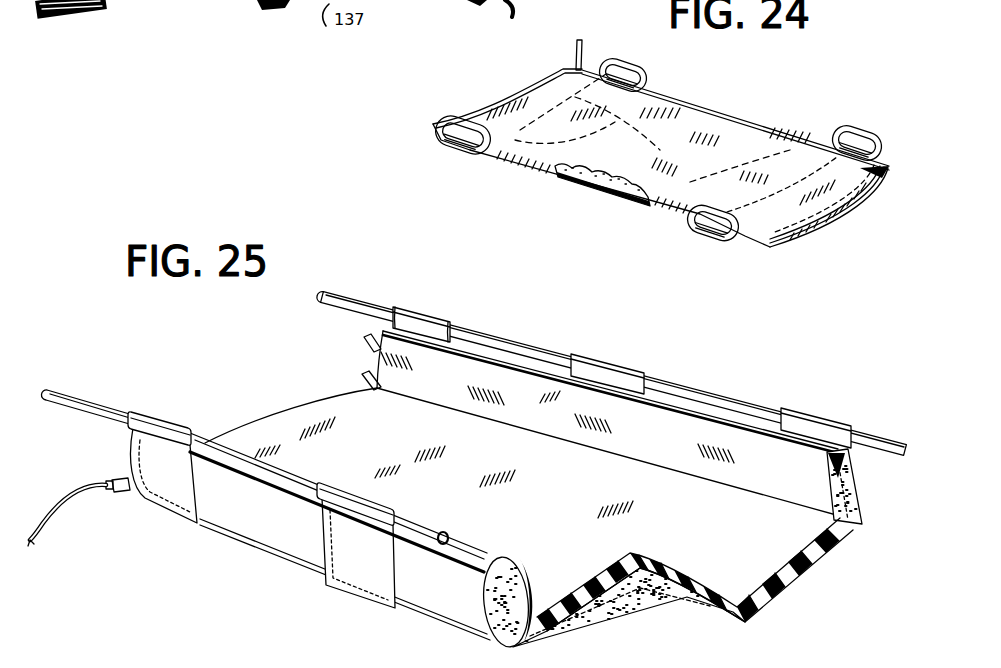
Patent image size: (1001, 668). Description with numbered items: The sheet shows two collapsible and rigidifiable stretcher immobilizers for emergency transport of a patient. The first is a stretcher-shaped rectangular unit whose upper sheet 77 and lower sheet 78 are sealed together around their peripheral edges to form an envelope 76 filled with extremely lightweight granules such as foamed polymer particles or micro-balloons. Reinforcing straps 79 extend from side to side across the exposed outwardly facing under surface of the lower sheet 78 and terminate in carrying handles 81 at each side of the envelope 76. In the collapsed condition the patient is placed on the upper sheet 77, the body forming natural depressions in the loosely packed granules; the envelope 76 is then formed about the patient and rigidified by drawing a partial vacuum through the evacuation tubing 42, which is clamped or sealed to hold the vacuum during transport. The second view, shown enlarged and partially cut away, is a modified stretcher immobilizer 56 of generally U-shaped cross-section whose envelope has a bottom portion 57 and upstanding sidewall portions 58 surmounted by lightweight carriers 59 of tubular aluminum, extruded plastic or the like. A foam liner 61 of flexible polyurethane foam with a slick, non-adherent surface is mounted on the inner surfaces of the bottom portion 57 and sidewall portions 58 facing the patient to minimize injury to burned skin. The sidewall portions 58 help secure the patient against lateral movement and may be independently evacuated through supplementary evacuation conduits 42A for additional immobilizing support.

In FIG. 24, the evacuation tubing 42 is at (576, 47).
In FIG. 25, the evacuation tubing 42 is at (364, 376).
In FIG. 25, the supplementary evacuation conduits 42A is at (366, 344).
In FIG. 25, the modified stretcher immobilizer 56 is at (824, 576).
In FIG. 25, the bottom portion 57 is at (764, 604).
In FIG. 25, the upstanding sidewall portions 58 is at (130, 466).
In FIG. 25, the lightweight carriers 59 is at (80, 397).
In FIG. 25, the foam liner 61 is at (625, 434).
In FIG. 24, the envelope 76 is at (714, 106).
In FIG. 24, the upper sheet 77 is at (653, 111).
In FIG. 24, the lower sheet 78 is at (570, 187).
In FIG. 24, the reinforcing straps 79 is at (527, 99).
In FIG. 24, the carrying handles 81 is at (630, 62).